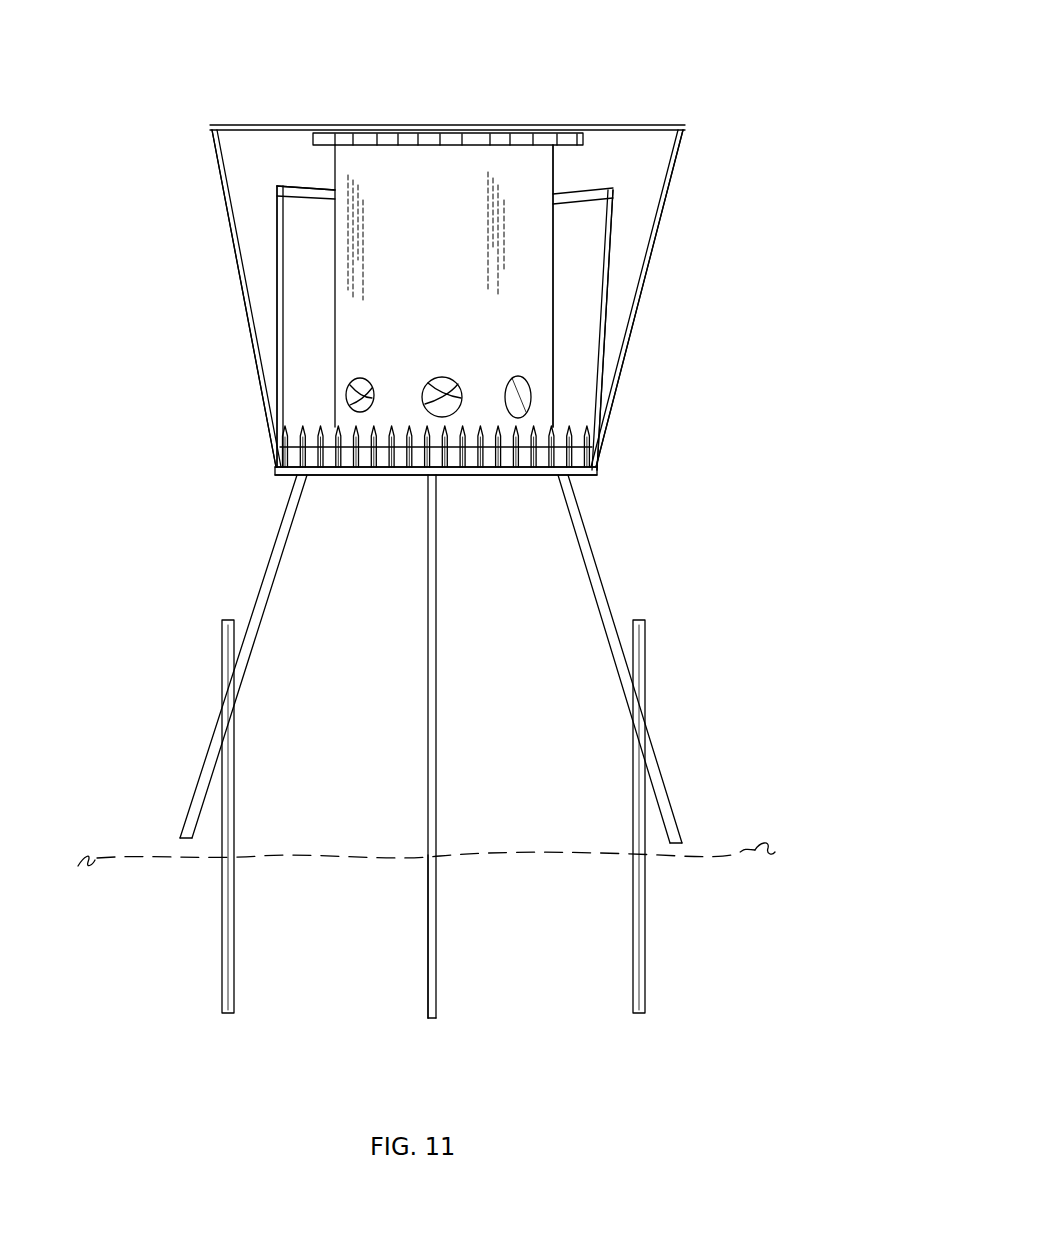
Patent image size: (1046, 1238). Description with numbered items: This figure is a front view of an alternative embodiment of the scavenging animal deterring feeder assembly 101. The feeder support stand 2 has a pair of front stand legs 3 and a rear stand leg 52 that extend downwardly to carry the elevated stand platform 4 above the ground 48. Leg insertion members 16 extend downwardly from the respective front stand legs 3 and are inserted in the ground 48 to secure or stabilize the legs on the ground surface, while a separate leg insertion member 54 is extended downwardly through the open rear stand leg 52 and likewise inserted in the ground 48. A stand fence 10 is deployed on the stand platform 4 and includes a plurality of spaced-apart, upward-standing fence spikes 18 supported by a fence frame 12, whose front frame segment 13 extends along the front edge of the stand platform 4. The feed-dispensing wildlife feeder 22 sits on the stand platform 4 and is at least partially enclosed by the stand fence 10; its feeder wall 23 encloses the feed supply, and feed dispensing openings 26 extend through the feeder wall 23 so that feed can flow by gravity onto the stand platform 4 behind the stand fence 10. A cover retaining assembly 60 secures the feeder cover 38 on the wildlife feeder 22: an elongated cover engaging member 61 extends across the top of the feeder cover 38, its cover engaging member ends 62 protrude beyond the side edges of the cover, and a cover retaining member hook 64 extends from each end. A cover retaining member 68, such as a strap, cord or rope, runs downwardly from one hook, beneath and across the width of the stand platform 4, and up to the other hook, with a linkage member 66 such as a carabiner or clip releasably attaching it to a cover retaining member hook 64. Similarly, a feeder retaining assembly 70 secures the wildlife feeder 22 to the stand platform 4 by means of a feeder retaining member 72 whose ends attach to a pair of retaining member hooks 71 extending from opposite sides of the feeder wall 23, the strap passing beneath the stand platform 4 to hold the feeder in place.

The scavenging animal deterring feeder assembly 101 is at (657, 55).
The cover retaining assembly 60 is at (300, 118).
The cover engaging member 61 is at (474, 124).
The cover engaging member ends 62 is at (241, 127).
The cover retaining member hook 64 is at (226, 129).
The linkage member 66 is at (212, 130).
The cover retaining member 68 is at (229, 217).
The feeder retaining member 72 is at (277, 303).
The feeder retaining assembly 70 is at (268, 193).
The feeder cover 38 is at (584, 141).
The feed-dispensing wildlife feeder 22 is at (332, 163).
The feeder wall 23 is at (530, 266).
The retaining member hooks 71 is at (553, 188).
The feed dispensing opening 26 is at (440, 376).
The stand fence 10 is at (302, 421).
The fence spikes 18 is at (586, 430).
The stand platform 4 is at (273, 464).
The fence frame 12 is at (385, 480).
The front frame segment 13 is at (500, 477).
The feeder support stand 2 is at (251, 570).
The front stand legs 3 is at (238, 694).
The leg insertion members 16 is at (236, 796).
The rear stand leg 52 is at (437, 742).
The leg insertion member 54 is at (437, 916).
The ground 48 is at (142, 842).